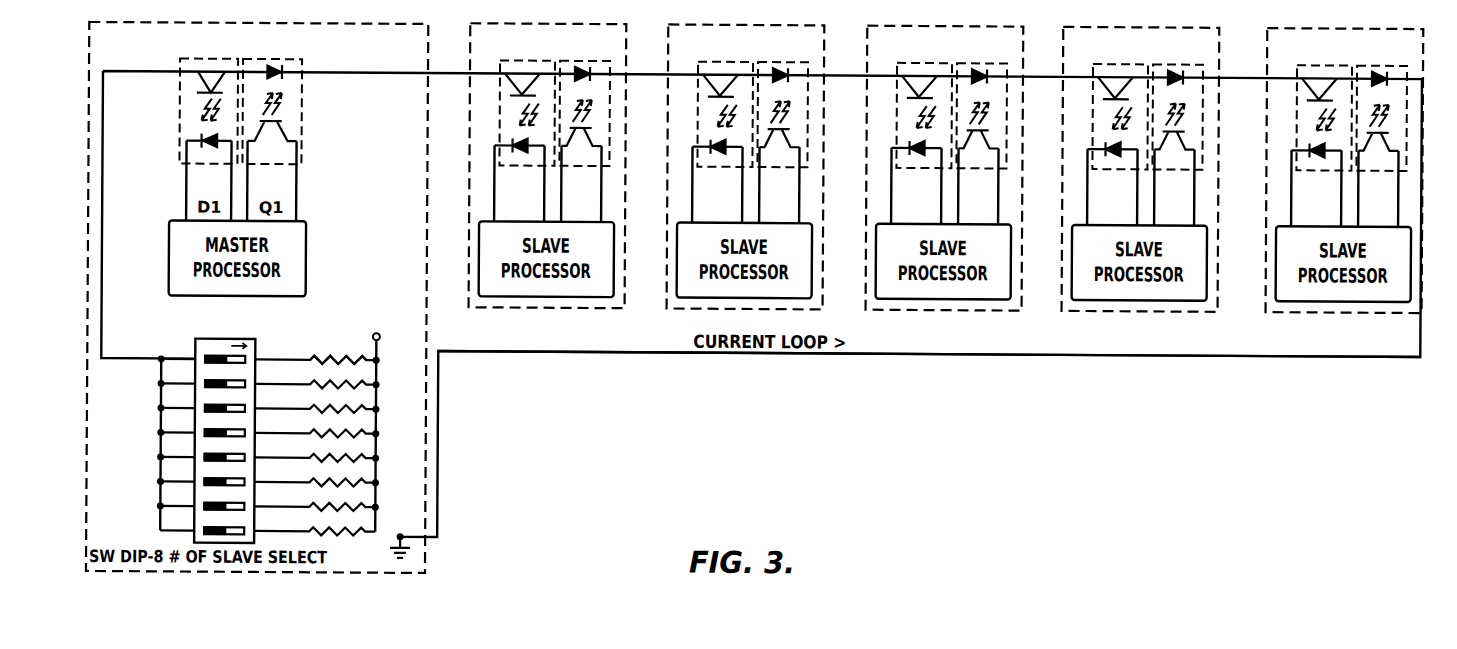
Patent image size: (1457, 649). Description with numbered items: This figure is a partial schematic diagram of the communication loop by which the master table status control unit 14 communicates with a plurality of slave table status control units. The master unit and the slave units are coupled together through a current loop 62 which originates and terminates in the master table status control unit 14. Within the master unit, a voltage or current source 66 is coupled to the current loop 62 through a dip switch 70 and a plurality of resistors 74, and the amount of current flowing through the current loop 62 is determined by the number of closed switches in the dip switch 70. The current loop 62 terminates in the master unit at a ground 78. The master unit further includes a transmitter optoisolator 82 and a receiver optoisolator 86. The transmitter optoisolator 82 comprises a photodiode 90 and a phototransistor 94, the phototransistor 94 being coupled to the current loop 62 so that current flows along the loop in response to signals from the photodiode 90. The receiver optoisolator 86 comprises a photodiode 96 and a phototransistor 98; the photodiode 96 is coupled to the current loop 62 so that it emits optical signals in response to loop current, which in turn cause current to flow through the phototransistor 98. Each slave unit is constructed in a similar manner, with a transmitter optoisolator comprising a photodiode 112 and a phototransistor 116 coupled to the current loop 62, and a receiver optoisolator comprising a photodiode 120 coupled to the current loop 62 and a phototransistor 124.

The master table status control unit 14 is at (397, 23).
The current loop 62 is at (1318, 350).
The voltage or current source 66 is at (378, 291).
The dip switch 70 is at (201, 337).
The resistors 74 is at (333, 352).
The ground 78 is at (402, 533).
The transmitter optoisolator 82 is at (203, 57).
The receiver optoisolator 86 is at (276, 57).
The photodiode 90 is at (199, 139).
The phototransistor 94 is at (196, 76).
The photodiode 96 is at (284, 76).
The phototransistor 98 is at (283, 138).
The photodiode 112 is at (490, 136).
The phototransistor 116 is at (488, 87).
The photodiode 120 is at (618, 66).
The phototransistor 124 is at (611, 123).